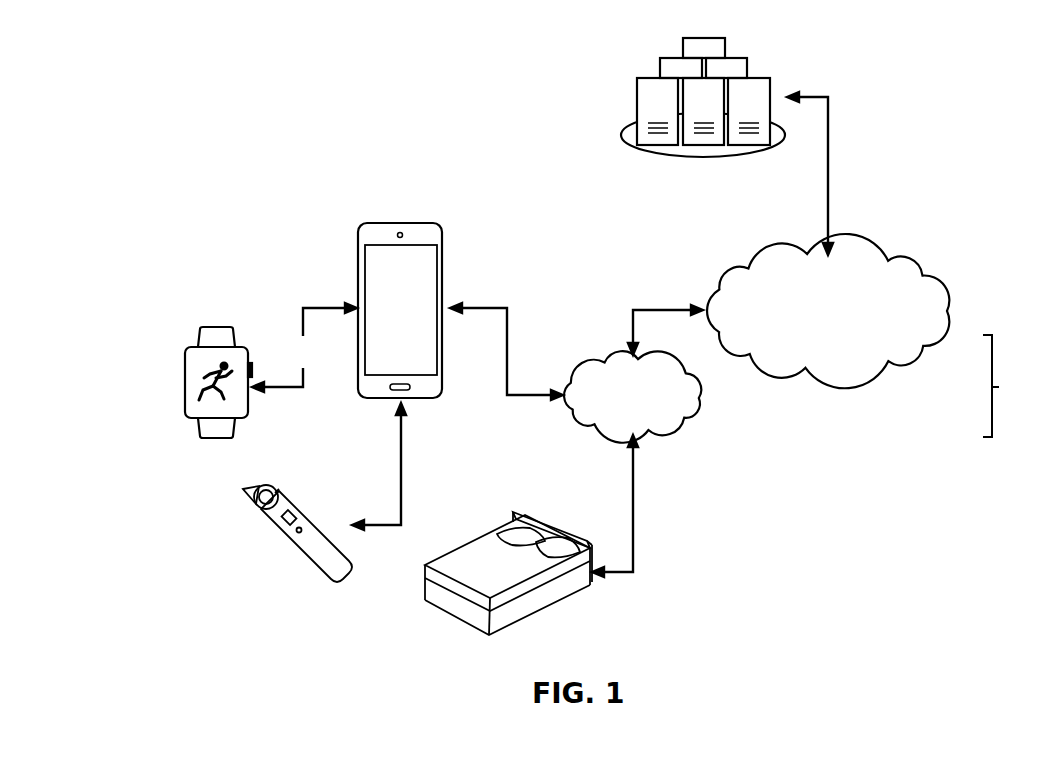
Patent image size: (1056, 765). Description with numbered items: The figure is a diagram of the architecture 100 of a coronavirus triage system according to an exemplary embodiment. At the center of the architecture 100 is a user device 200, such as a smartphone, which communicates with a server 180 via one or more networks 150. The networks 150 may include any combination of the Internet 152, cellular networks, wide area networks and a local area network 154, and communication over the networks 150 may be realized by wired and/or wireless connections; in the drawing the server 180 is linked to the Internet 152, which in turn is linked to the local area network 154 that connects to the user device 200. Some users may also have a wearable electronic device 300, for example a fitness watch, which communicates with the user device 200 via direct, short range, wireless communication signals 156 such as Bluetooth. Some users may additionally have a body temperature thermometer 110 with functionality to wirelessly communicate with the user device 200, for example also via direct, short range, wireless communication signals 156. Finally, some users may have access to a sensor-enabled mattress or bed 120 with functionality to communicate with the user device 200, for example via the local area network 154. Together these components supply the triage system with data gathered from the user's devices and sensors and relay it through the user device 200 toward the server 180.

The architecture 100 is at (238, 110).
The body temperature thermometer 110 is at (297, 530).
The sensor-enabled mattress or bed 120 is at (511, 573).
The networks 150 is at (1010, 386).
The Internet 152 is at (836, 311).
The local area network 154 is at (650, 397).
The wireless communication signals 156 is at (304, 347).
The server 180 is at (711, 97).
The user device 200 is at (427, 310).
The wearable electronic device 300 is at (192, 382).